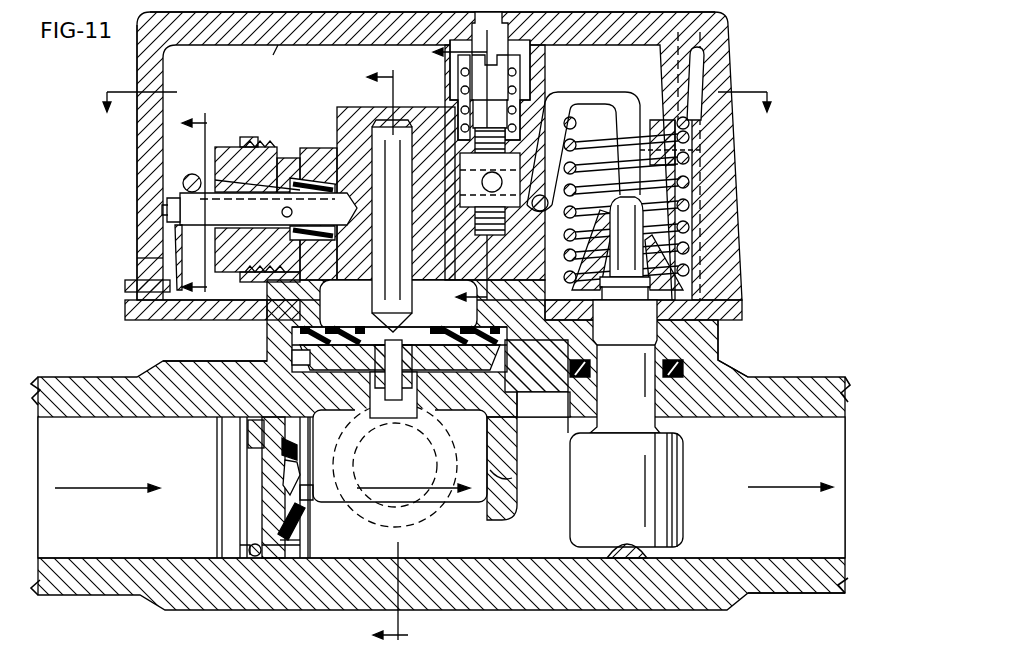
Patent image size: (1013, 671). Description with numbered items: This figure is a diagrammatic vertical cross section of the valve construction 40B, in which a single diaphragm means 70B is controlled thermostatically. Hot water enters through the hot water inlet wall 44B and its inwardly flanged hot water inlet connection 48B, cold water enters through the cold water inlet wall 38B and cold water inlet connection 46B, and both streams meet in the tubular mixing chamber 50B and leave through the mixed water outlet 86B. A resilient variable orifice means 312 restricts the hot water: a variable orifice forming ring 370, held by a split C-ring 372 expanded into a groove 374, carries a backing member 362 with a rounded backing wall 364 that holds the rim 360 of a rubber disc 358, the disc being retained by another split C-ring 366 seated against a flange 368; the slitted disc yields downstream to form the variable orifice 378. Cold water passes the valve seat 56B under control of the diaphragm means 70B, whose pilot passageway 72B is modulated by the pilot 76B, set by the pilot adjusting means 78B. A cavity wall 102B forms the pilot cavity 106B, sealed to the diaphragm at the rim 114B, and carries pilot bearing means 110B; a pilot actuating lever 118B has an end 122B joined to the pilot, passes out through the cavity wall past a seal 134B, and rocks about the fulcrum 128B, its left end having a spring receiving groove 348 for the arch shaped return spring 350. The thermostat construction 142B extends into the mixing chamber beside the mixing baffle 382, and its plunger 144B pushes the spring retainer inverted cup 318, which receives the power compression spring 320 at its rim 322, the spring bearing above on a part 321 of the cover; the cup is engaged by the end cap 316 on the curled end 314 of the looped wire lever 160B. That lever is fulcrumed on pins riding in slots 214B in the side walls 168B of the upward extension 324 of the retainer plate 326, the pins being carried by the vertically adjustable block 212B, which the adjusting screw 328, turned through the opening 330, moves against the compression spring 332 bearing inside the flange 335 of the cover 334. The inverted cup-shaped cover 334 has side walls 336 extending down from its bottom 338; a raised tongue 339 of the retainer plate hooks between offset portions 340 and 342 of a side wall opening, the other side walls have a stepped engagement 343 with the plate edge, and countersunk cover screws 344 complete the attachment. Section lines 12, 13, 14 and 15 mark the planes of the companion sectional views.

The section line 12- 12 is at (375, 359).
The section line 13- 13 is at (440, 114).
The section line 14- 14 is at (449, 175).
The section line 15- 15 is at (213, 206).
The cold water inlet wall 38B is at (438, 520).
The valve construction 40B is at (102, 203).
The hot water inlet wall 44B is at (110, 585).
The cold water inlet connection 46B is at (395, 465).
The hot water inlet connection 48B is at (312, 547).
The mixing chamber 50B is at (418, 545).
The cold water valve seat 56B is at (523, 468).
The diaphragm means 70B is at (297, 323).
The fluid pilot passageway 72B is at (400, 328).
The fluid pilot 76B is at (337, 133).
The fluid pilot adjusting means 78B is at (240, 102).
The mixed water outlet 86B is at (775, 595).
The cavity wall 102B is at (235, 303).
The pilot cavity 106B is at (375, 272).
The pilot bearing means 110B is at (340, 135).
The rim 114B is at (539, 386).
The pilot actuating lever 118B is at (172, 247).
The end 122B is at (272, 197).
The fulcrum 128B is at (268, 203).
The seal 134B is at (300, 185).
The thermostat construction 142B is at (700, 345).
The thermostat plunger 144B is at (683, 232).
The actuating lever adjusting means 160B is at (188, 176).
The side walls 168B is at (641, 98).
The vertically adjustable block 212B is at (468, 167).
The slots 214B is at (697, 143).
The variable orifice means 312 is at (262, 556).
The end of wire 314 is at (704, 80).
The end cap 316 is at (713, 160).
The spring retainer inverted cup 318 is at (692, 275).
The power compression spring 320 is at (700, 248).
The part of the cover 321 is at (712, 80).
The rim of the cup 322 is at (700, 290).
The upward extension 324 is at (626, 366).
The retainer plate 326 is at (626, 495).
The adjusting screw 328 is at (505, 84).
The opening 330 is at (480, 33).
The compression spring 332 is at (460, 82).
The cover 334 is at (157, 26).
The flange 335 is at (655, 32).
The side walls 336 is at (153, 68).
The bottom 338 is at (252, 57).
The raised tongue 339 is at (125, 284).
The offset portion 340 is at (133, 308).
The offset portion 342 is at (140, 258).
The stepped engagement 343 is at (730, 312).
The cover screws 344 is at (702, 195).
The spring receiving groove 348 is at (174, 197).
The compression return spring 350 is at (180, 232).
The resilient rubber disc 358 is at (282, 503).
The rim of the disc 360 is at (290, 548).
The backing member 362 is at (300, 540).
The rounded backing wall 364 is at (305, 497).
The split C-ring 366 is at (270, 533).
The flange 368 is at (268, 552).
The variable orifice forming ring 370 is at (250, 428).
The split C-ring 372 is at (255, 482).
The groove 374 is at (250, 432).
The variable orifice 378 is at (395, 465).
The mixing baffle 382 is at (502, 478).